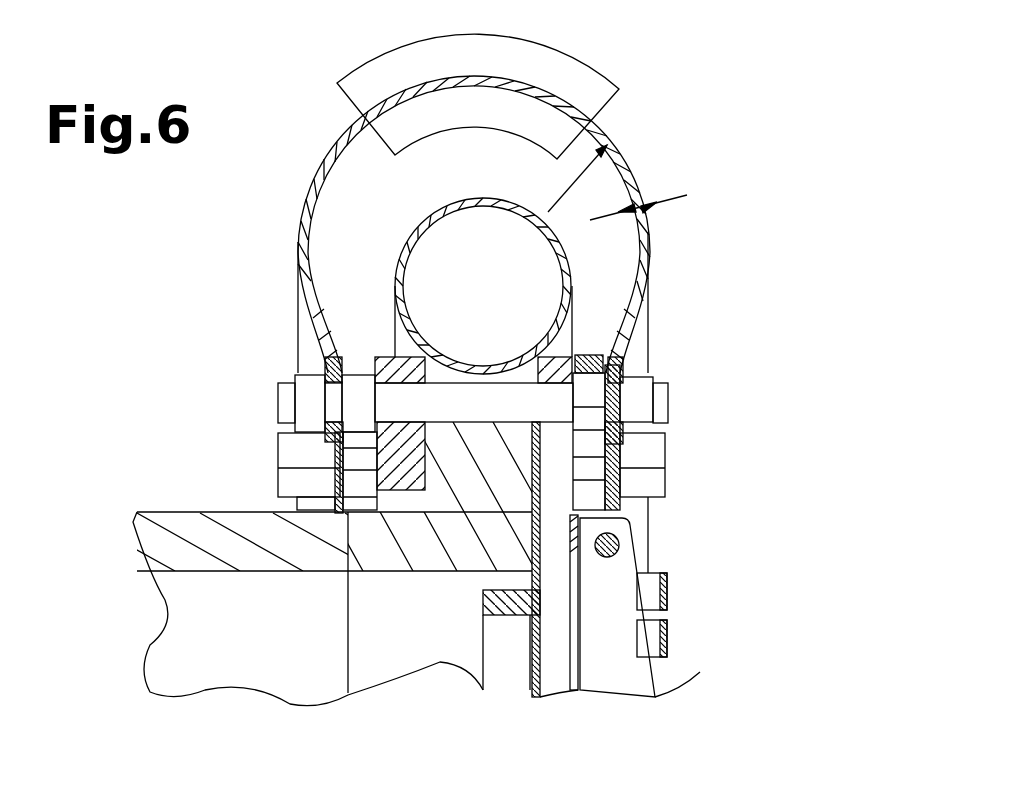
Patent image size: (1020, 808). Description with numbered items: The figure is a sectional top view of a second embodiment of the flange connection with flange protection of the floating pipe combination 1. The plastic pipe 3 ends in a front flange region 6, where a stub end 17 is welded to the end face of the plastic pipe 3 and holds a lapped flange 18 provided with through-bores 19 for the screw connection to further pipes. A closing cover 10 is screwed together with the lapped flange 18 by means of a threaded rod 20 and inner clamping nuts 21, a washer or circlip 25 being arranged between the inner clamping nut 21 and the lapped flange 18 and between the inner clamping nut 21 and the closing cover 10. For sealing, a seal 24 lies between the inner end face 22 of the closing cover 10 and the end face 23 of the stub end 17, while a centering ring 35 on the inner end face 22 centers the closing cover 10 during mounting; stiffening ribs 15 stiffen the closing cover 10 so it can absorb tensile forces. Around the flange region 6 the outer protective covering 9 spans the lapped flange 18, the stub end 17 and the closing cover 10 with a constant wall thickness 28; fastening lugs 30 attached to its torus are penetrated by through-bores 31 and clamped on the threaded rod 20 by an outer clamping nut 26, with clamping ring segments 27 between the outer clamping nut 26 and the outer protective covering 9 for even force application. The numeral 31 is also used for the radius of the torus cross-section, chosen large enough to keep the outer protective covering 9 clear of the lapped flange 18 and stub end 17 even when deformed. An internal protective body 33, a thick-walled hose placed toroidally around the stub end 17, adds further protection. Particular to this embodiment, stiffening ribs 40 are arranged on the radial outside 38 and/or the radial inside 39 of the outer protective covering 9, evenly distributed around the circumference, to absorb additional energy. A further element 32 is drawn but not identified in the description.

The pipe combination 1 is at (797, 105).
The plastic pipe 3 is at (172, 552).
The front flange region 6 is at (667, 617).
The outer protective covering 9 is at (560, 150).
The closing cover 10 is at (619, 548).
The stiffening ribs 15 is at (640, 667).
The stub end 17 is at (383, 558).
The lapped flange 18 is at (385, 363).
The through-bores 19 is at (385, 362).
The threaded rod 20 is at (577, 360).
The inner clamping nut 21 is at (350, 378).
The inner end face 22 is at (540, 578).
The end face 23 is at (667, 590).
The seal 24 is at (650, 522).
The washer or circlip 25 is at (332, 368).
The outer clamping nut 26 is at (278, 395).
The clamping ring segments 27 is at (278, 442).
The wall thickness 28 is at (680, 194).
The fastening lugs 30 is at (278, 468).
The through-bores 31 is at (580, 181).
The axis 32 is at (648, 367).
The internal protective body 33 is at (573, 237).
The centering ring 35 is at (640, 647).
The radial outside 38 is at (345, 148).
The radial inside 39 is at (330, 162).
The stiffening ribs 40 is at (366, 72).